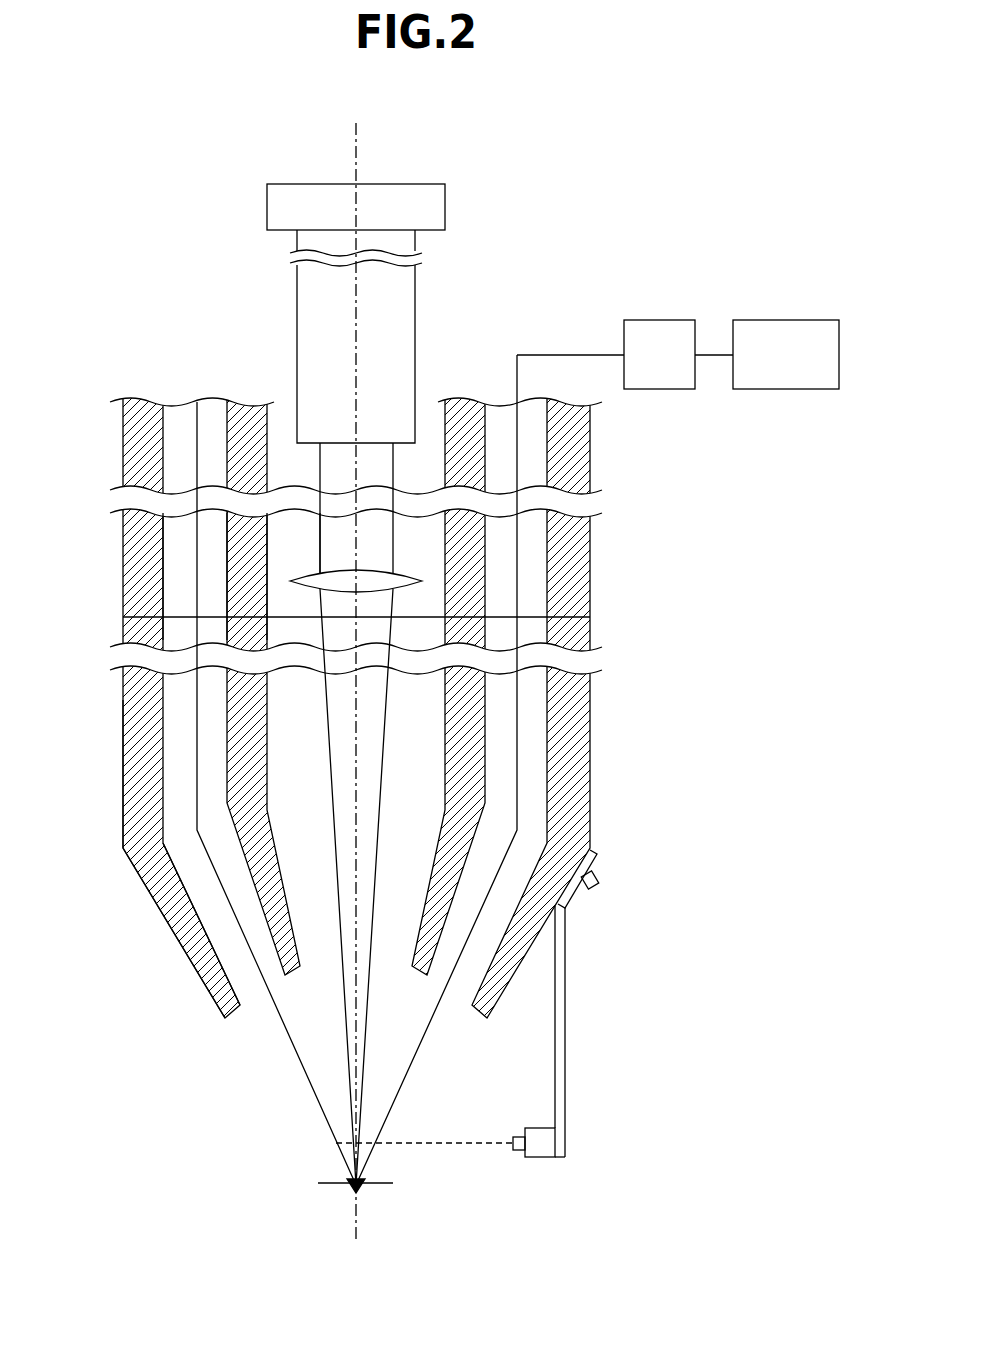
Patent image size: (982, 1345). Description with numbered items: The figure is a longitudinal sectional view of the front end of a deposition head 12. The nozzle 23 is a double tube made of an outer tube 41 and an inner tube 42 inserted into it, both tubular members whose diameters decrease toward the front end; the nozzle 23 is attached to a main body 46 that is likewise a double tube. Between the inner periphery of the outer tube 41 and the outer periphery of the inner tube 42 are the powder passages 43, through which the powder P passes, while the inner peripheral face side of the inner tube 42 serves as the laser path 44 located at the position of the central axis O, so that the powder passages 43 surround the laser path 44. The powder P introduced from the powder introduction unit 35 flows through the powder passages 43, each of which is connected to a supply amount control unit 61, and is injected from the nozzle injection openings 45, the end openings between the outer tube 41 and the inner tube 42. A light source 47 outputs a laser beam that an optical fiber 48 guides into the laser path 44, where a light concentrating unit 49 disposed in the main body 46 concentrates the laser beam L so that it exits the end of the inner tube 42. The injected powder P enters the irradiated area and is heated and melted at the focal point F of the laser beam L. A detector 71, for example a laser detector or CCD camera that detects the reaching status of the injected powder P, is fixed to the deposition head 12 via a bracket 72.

The deposition head 12 is at (153, 943).
The nozzle 23 is at (110, 831).
The powder introduction unit 35 is at (783, 320).
The outer tube 41 is at (123, 703).
The inner tube 42 is at (227, 581).
The powder passages 43 is at (184, 531).
The laser path 44 is at (292, 462).
The nozzle injection openings 45 is at (253, 990).
The main body 46 is at (590, 542).
The light source 47 is at (432, 209).
The optical fiber 48 is at (398, 309).
The light concentrating unit 49 is at (422, 583).
The supply amount control unit 61 is at (658, 302).
The detector 71 is at (540, 1158).
The bracket 72 is at (566, 1021).
The central axis O is at (356, 158).
The laser beam L is at (382, 788).
The powder P is at (518, 722).
The focal point F is at (345, 1190).